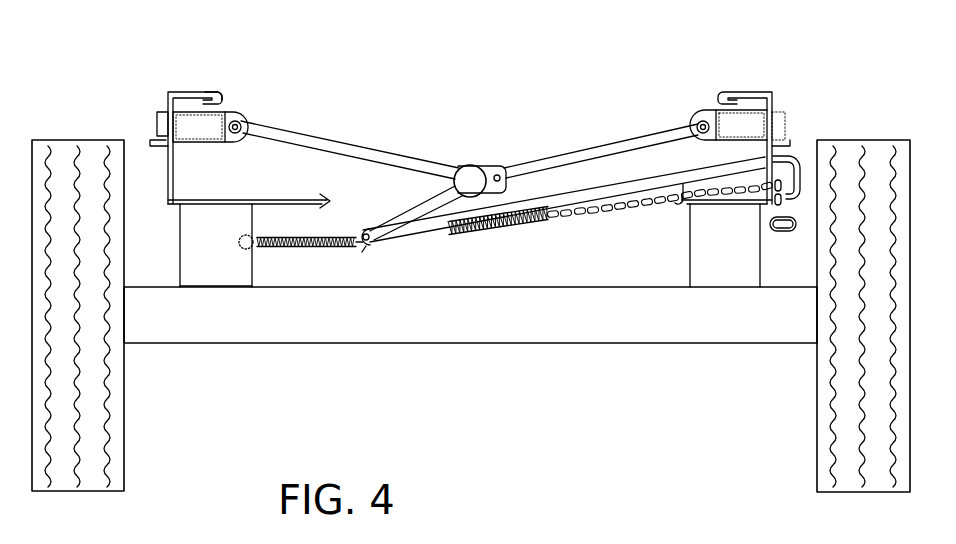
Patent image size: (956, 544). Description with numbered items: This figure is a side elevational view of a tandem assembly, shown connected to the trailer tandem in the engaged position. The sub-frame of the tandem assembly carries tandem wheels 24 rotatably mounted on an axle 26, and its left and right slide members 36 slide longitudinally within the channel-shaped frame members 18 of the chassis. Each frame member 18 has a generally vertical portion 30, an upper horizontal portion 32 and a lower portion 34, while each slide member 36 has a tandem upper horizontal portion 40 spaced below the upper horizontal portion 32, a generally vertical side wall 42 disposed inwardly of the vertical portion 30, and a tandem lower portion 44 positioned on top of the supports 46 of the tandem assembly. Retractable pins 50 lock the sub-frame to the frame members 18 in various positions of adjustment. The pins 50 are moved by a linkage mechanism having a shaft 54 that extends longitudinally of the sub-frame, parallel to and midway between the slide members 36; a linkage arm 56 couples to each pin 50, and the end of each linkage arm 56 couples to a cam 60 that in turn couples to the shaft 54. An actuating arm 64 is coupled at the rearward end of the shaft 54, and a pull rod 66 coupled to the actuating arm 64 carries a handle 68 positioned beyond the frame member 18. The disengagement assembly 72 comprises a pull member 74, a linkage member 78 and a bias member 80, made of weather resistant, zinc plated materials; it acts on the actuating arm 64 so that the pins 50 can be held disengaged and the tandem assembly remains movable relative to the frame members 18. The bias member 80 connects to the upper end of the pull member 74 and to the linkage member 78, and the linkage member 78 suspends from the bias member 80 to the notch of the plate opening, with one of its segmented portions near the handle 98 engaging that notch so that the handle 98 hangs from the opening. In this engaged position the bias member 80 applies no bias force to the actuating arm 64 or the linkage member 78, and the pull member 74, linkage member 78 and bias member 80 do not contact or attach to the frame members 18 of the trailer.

The frame member 18 is at (720, 96).
The tandem wheels 24 is at (118, 422).
The axle 26 is at (356, 328).
The vertical portion 30 is at (166, 100).
The upper horizontal portion 32 is at (197, 92).
The lower portion 34 is at (160, 148).
The slide member 36 is at (774, 95).
The tandem upper horizontal portion 40 is at (215, 108).
The vertical side wall 42 is at (178, 170).
The tandem lower portion 44 is at (190, 205).
The supports 46 is at (213, 272).
The pins 50 is at (157, 126).
The shaft 54 is at (466, 178).
The linkage arm 56 is at (578, 150).
The cam 60 is at (490, 163).
The actuating arm 64 is at (420, 212).
The pull rod 66 is at (613, 188).
The handle 68 is at (792, 160).
The disengagement assembly 72 is at (658, 219).
The pull member 74 is at (400, 243).
The linkage member 78 is at (604, 214).
The bias member 80 is at (525, 230).
The handle 98 is at (783, 236).